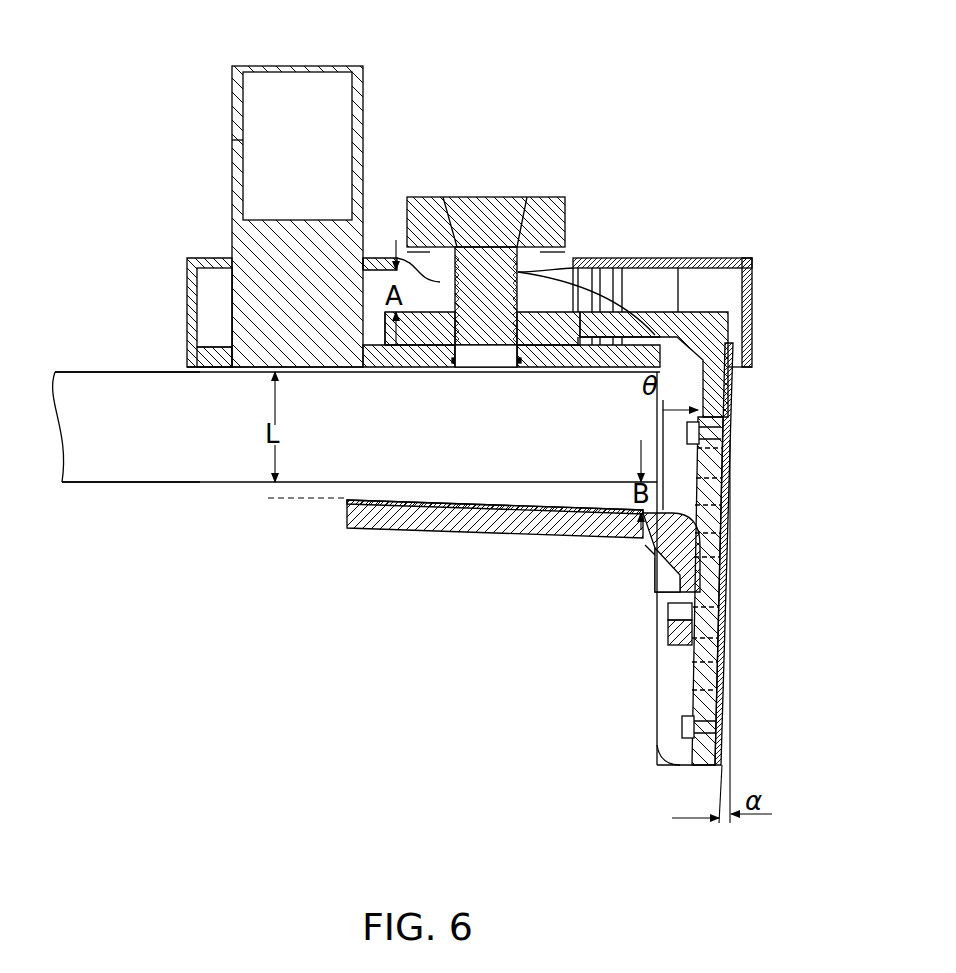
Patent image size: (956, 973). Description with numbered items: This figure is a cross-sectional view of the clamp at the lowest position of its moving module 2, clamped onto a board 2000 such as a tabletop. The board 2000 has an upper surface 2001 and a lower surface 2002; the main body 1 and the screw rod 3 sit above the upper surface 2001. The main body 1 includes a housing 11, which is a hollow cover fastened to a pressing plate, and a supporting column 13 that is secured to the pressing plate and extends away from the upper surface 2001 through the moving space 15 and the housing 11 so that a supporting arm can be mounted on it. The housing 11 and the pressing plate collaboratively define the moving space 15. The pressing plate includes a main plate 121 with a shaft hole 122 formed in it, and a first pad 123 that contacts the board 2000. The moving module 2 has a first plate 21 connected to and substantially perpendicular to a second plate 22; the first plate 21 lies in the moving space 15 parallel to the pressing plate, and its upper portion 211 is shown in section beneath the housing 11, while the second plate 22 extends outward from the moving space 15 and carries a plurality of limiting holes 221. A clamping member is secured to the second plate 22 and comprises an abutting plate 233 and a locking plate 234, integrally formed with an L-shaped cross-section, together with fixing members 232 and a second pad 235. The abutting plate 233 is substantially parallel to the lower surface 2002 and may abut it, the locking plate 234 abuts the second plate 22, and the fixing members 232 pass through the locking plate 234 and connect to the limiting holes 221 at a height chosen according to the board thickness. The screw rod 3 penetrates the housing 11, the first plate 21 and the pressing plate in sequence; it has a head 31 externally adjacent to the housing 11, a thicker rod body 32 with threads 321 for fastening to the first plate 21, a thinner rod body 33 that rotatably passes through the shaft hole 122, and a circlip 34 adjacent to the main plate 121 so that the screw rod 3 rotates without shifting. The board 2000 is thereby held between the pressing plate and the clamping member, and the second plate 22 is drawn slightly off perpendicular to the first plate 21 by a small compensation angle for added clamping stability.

The main body 1 is at (160, 220).
The housing 11 is at (187, 297).
The supporting column 13 is at (232, 97).
The moving space 15 is at (372, 268).
The screw rod 3 is at (509, 251).
The head 31 is at (540, 197).
The threads 321 is at (445, 215).
The thicker rod body 32 is at (520, 262).
The thinner rod body 33 is at (478, 364).
The circlip 34 is at (460, 363).
The shaft hole 122 is at (522, 345).
The main plate 121 is at (595, 367).
The first pad 123 is at (205, 372).
The top plate of mounting member 211 is at (612, 310).
The first plate 21 is at (660, 320).
The second plate 22 is at (730, 385).
The limiting holes 221 is at (722, 455).
The moving module 2 is at (589, 554).
The board 2000 is at (148, 445).
The upper surface 2001 is at (80, 372).
The lower surface 2002 is at (78, 482).
The abutting plate 233 is at (400, 538).
The second pad 235 is at (495, 505).
The fixing members 232 is at (648, 565).
The locking plate 234 is at (668, 632).